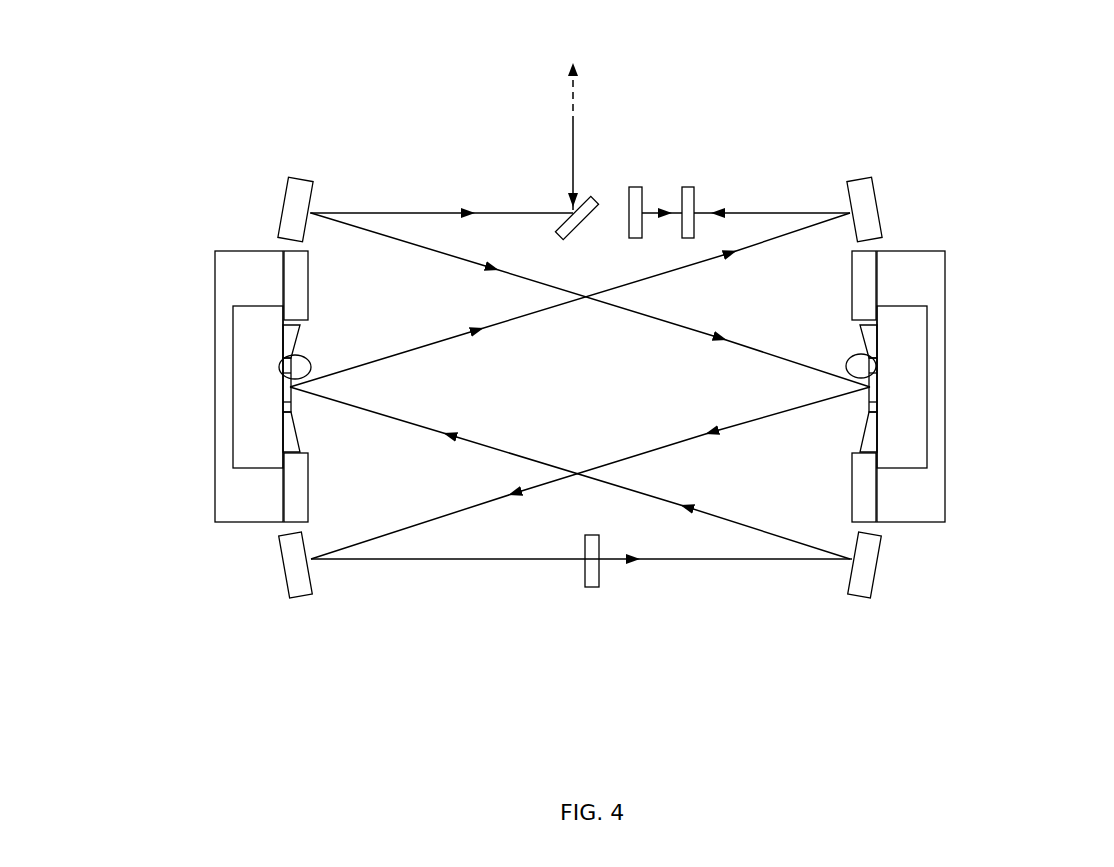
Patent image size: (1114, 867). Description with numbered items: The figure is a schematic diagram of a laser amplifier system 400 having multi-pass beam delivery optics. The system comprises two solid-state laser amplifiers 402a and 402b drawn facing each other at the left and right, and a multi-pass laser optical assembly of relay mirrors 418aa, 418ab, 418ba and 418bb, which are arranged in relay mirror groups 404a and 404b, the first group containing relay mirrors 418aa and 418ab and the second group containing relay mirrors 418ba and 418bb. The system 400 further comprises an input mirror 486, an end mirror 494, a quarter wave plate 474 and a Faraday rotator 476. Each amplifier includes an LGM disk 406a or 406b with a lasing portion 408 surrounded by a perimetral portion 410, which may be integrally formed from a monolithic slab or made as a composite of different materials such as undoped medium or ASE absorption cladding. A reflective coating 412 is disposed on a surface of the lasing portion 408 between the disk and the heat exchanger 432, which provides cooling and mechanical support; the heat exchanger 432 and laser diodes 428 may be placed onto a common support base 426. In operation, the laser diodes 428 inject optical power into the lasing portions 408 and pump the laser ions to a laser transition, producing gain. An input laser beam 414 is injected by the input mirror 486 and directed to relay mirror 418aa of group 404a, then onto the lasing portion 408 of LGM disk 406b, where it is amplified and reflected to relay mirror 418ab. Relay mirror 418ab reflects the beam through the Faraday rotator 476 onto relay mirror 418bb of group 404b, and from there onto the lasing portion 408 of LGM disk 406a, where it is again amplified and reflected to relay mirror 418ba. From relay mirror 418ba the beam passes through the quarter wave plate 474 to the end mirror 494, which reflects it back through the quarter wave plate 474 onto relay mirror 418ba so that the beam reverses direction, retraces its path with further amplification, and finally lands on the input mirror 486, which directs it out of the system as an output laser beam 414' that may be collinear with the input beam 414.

The laser amplifier system 400 is at (682, 68).
The solid-state laser amplifier 402a is at (243, 248).
The solid-state laser amplifier 402b is at (909, 250).
The relay mirror group 404a is at (298, 600).
The relay mirror group 404b is at (867, 600).
The LGM disk 406a is at (282, 347).
The LGM disk 406b is at (880, 340).
The lasing portion 408 is at (285, 393).
The perimetral portion 410 is at (285, 430).
The reflective coating 412 is at (283, 358).
The input laser beam 414 is at (515, 166).
The laser beam 414' is at (517, 93).
The relay mirror 418aa is at (313, 196).
The relay mirror 418ab is at (313, 575).
The relay mirror 418ba is at (848, 200).
The relay mirror 418bb is at (852, 572).
The common support base 426 is at (215, 258).
The laser diodes 428 is at (283, 498).
The heat exchanger 432 is at (240, 306).
The quarter wave plate 474 is at (690, 187).
The Faraday rotator 476 is at (583, 570).
The input mirror 486 is at (560, 213).
The end mirror 494 is at (640, 188).